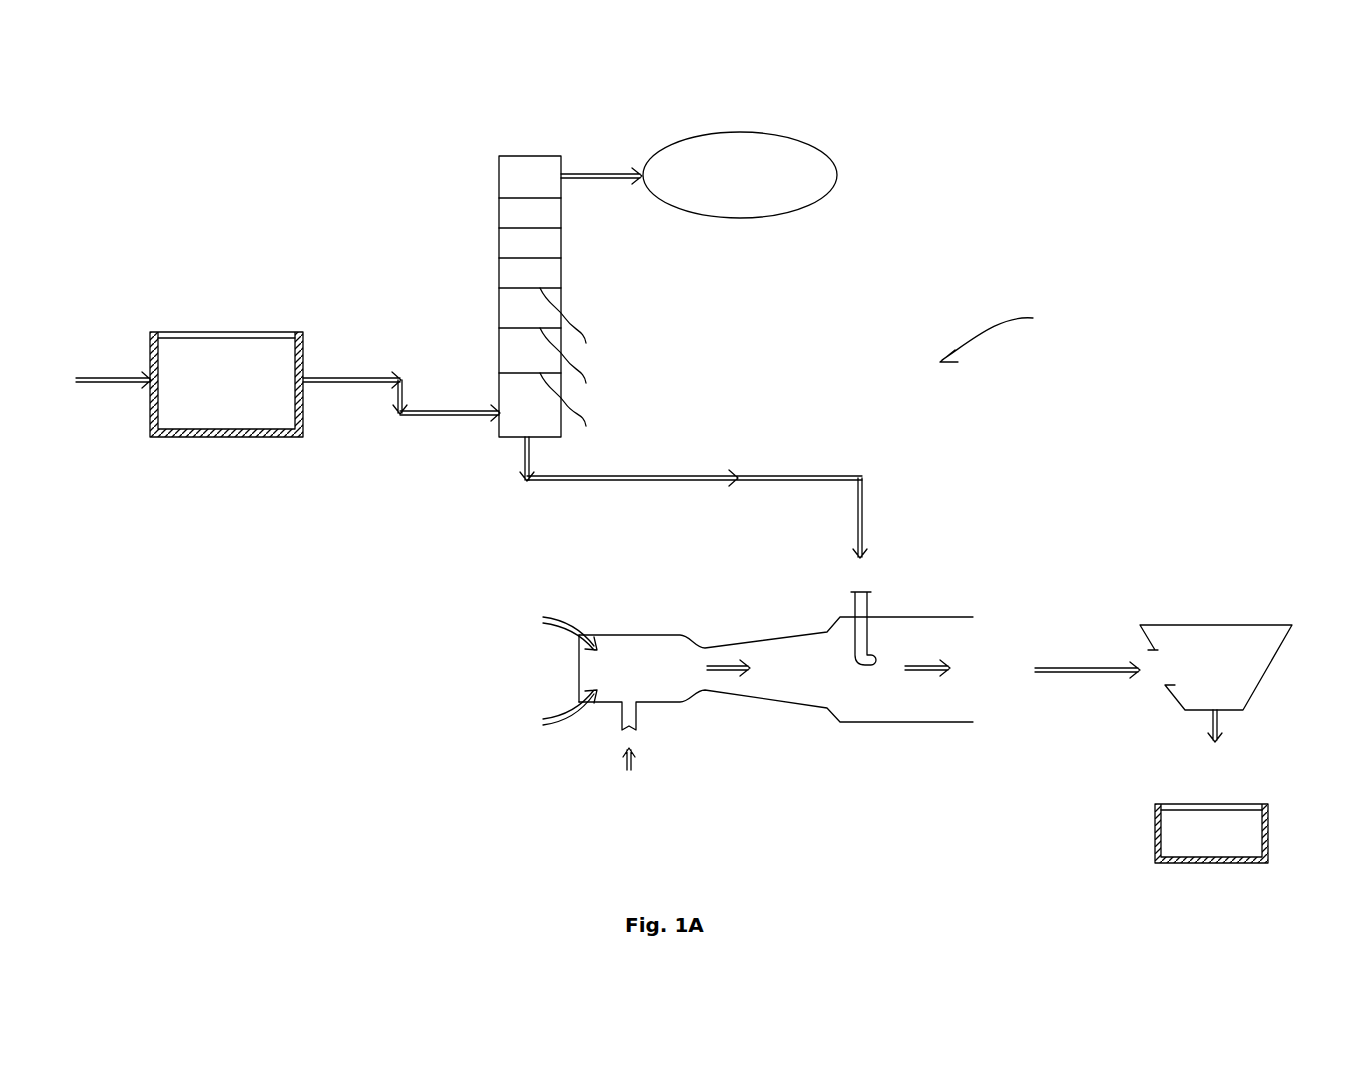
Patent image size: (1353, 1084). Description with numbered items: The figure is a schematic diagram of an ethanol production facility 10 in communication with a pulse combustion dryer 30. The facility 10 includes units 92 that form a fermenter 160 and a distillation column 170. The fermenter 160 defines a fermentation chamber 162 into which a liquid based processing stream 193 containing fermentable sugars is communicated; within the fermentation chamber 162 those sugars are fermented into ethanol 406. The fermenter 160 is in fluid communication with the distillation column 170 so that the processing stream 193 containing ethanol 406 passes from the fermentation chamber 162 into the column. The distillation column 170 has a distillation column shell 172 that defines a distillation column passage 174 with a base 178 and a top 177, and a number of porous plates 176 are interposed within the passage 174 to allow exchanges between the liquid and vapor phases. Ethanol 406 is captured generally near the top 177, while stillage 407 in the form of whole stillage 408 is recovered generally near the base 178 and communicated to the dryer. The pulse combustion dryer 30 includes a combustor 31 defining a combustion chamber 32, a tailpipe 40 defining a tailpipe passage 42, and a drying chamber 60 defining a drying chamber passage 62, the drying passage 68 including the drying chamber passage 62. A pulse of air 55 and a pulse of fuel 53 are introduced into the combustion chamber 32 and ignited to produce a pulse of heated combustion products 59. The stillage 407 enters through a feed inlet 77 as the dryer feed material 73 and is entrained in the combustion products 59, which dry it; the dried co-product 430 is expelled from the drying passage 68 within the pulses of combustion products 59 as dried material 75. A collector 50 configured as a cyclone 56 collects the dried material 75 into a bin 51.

The ethanol production facility 10 is at (1000, 330).
The pulse combustion dryer 30 is at (803, 784).
The combustor 31 is at (579, 668).
The combustion chamber 32 is at (628, 639).
The tailpipe 40 is at (773, 633).
The tailpipe passage 42 is at (780, 694).
The collector 50 is at (1215, 625).
The bin 51 is at (1157, 825).
The pulse of fuel 53 is at (633, 758).
The pulse of air 55 is at (560, 622).
The cyclone 56 is at (1268, 668).
The pulse of heated combustion products 59 is at (727, 663).
The drying chamber 60 is at (900, 724).
The drying chamber passage 62 is at (945, 705).
The drying passage 68 is at (838, 683).
The dryer feed material 73 is at (862, 527).
The dried material 75 is at (1100, 667).
The feed inlet 77 is at (870, 600).
The units 92 is at (232, 432).
The fermenter 160 is at (172, 432).
The fermentation chamber 162 is at (235, 345).
The distillation column 170 is at (499, 226).
The distillation column shell 172 is at (561, 303).
The distillation column passage 174 is at (553, 275).
The porous plates 176 is at (577, 369).
The top 177 is at (525, 156).
The base 178 is at (518, 427).
The liquid based processing stream 193 is at (103, 376).
The ethanol 406 is at (800, 137).
The stillage 407 is at (672, 476).
The whole stillage 408 is at (690, 482).
The dried co-product 430 is at (1218, 722).